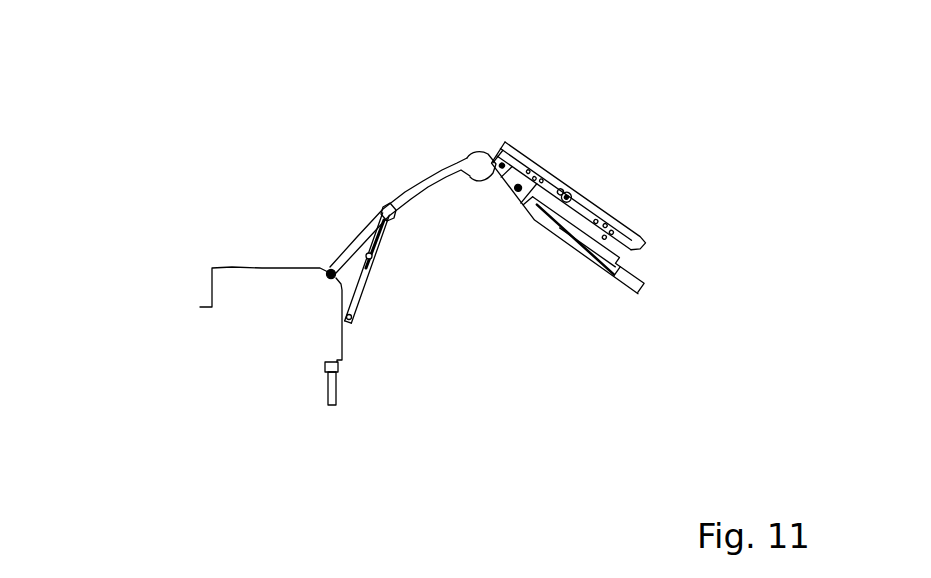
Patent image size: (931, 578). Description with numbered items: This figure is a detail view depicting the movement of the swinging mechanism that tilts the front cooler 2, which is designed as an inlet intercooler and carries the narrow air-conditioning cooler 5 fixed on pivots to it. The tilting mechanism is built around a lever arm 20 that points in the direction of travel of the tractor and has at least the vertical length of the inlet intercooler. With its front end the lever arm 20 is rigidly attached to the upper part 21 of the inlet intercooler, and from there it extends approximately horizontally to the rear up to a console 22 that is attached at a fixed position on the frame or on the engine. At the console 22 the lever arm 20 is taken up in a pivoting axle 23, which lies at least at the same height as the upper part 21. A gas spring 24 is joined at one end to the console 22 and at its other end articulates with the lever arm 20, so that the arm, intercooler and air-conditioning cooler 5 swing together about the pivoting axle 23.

The front cooler 2 is at (568, 193).
The air-conditioning cooler 5 is at (592, 215).
The lever arm 20 is at (426, 182).
The upper part of the inlet intercooler 21 is at (503, 152).
The console 22 is at (262, 268).
The pivoting axle 23 is at (327, 269).
The gas spring 24 is at (363, 265).